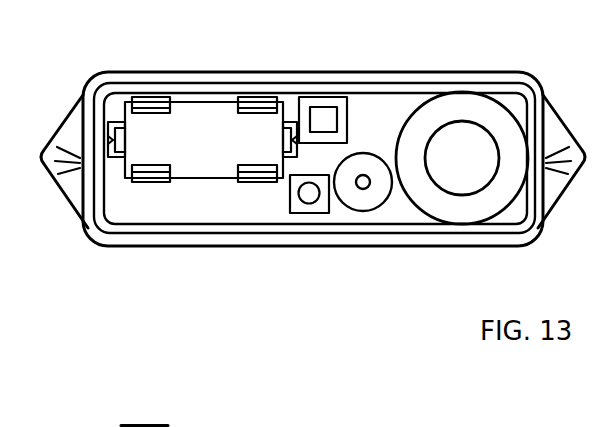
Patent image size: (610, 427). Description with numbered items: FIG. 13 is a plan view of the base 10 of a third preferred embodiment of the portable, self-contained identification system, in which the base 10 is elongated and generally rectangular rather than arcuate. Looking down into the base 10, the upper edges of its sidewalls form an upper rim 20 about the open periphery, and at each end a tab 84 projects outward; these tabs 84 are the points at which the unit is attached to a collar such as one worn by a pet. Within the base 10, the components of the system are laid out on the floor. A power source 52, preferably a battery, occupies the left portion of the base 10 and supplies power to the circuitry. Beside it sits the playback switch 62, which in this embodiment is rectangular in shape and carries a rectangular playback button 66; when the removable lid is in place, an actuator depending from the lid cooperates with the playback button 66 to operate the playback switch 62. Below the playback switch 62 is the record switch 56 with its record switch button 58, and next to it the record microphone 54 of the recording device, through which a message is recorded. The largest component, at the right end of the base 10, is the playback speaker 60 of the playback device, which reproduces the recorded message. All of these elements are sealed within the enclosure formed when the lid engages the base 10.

The base 10 is at (407, 212).
The upper rim 20 is at (490, 72).
The power source 52 is at (193, 120).
The record microphone 54 is at (365, 203).
The record switch 56 is at (292, 200).
The record switch button 58 is at (313, 195).
The playback speaker 60 is at (497, 197).
The playback switch 62 is at (342, 100).
The playback button 66 is at (320, 117).
The tabs 84 is at (68, 128).